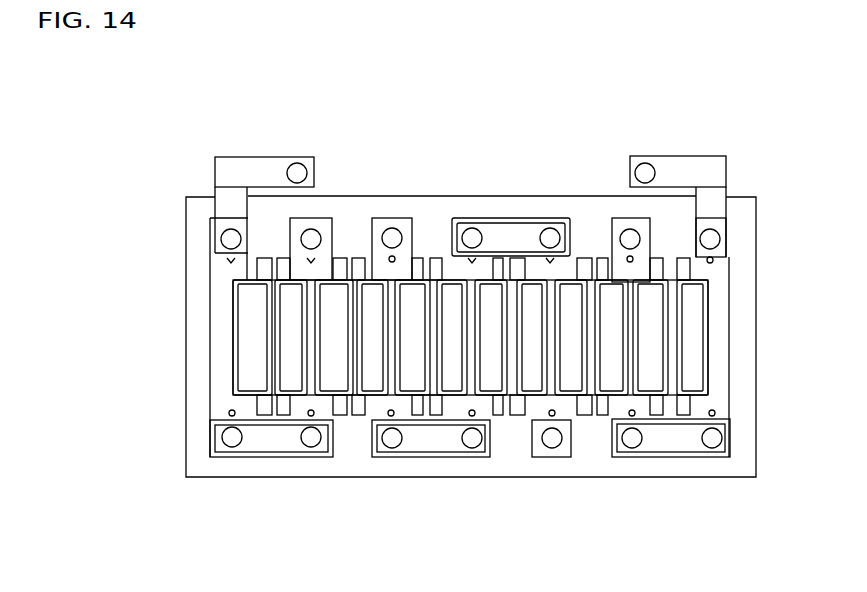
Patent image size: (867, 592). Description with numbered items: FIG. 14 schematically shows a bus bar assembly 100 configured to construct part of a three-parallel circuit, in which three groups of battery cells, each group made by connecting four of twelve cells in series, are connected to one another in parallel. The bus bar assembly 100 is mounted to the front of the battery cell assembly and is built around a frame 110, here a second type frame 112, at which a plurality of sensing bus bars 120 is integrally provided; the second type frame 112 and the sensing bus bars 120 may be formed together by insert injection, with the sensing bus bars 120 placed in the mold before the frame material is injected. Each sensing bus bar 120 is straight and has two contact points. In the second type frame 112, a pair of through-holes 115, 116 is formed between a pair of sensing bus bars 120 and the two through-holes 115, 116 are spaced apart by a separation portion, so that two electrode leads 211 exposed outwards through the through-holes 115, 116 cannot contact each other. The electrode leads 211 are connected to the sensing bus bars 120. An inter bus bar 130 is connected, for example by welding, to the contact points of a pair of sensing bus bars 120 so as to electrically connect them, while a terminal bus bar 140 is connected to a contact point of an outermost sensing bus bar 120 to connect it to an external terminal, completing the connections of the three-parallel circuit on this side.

The bus bar assembly 100 is at (452, 309).
The frame 110 is at (452, 381).
The second type frame 112 is at (203, 460).
The through-hole 115 is at (427, 262).
The through-hole 116 is at (438, 263).
The sensing bus bar 120 is at (558, 446).
The inter bus bar 130 is at (673, 438).
The terminal bus bar 140 is at (251, 177).
The electrode lead 211 is at (410, 348).